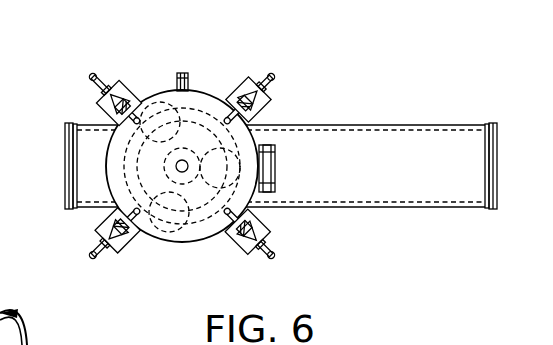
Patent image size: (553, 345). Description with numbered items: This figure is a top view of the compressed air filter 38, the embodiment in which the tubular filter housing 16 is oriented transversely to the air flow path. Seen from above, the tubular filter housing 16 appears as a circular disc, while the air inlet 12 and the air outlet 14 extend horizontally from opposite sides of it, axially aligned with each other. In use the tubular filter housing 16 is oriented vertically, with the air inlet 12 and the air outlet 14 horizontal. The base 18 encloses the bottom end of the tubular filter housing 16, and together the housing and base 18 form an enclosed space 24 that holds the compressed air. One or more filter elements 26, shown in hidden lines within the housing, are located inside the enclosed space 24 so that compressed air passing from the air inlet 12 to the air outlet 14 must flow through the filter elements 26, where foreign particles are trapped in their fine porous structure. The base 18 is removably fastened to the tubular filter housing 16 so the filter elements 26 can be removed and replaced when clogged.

The air inlet 12 is at (498, 148).
The air outlet 14 is at (64, 148).
The tubular filter housing 16 is at (194, 90).
The base 18 is at (211, 242).
The enclosed space 24 is at (268, 140).
The filter elements 26 is at (160, 104).
The filter 38 is at (127, 66).